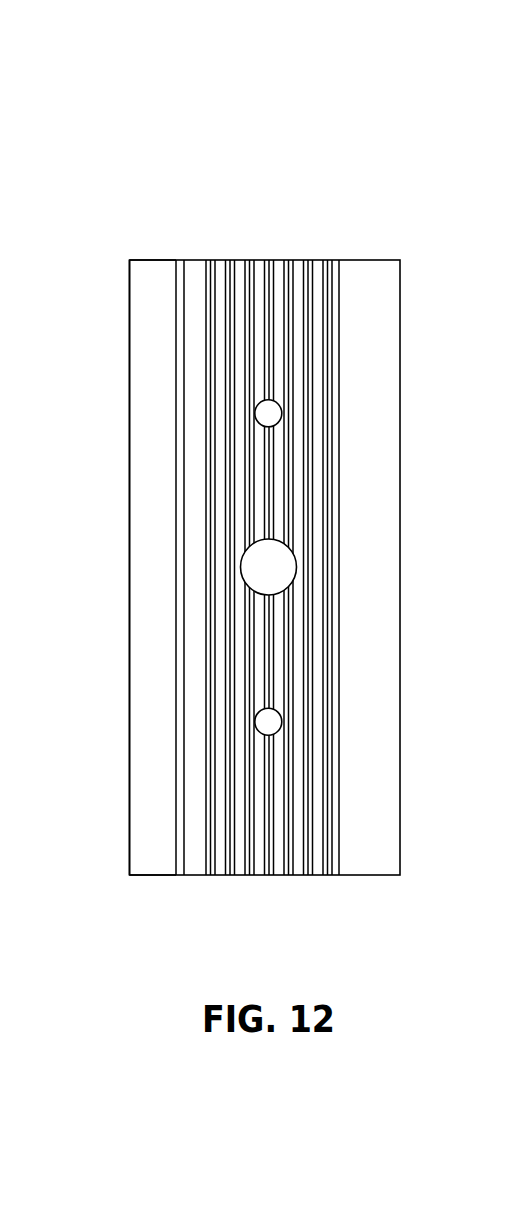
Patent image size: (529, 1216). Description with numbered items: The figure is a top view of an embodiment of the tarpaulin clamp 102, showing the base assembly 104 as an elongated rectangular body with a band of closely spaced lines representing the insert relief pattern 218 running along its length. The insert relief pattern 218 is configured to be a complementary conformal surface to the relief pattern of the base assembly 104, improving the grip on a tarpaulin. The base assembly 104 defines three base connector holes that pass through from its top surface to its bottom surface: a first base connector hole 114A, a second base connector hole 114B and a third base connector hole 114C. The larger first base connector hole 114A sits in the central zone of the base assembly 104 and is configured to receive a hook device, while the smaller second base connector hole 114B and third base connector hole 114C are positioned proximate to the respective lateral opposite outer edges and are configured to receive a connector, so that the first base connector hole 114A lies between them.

The tarpaulin clamp 102 is at (133, 148).
The base assembly 104 is at (160, 260).
The insert relief pattern 218 is at (288, 260).
The first base connector hole 114A is at (240, 569).
The second base connector hole 114B is at (254, 414).
The third base connector hole 114C is at (254, 722).